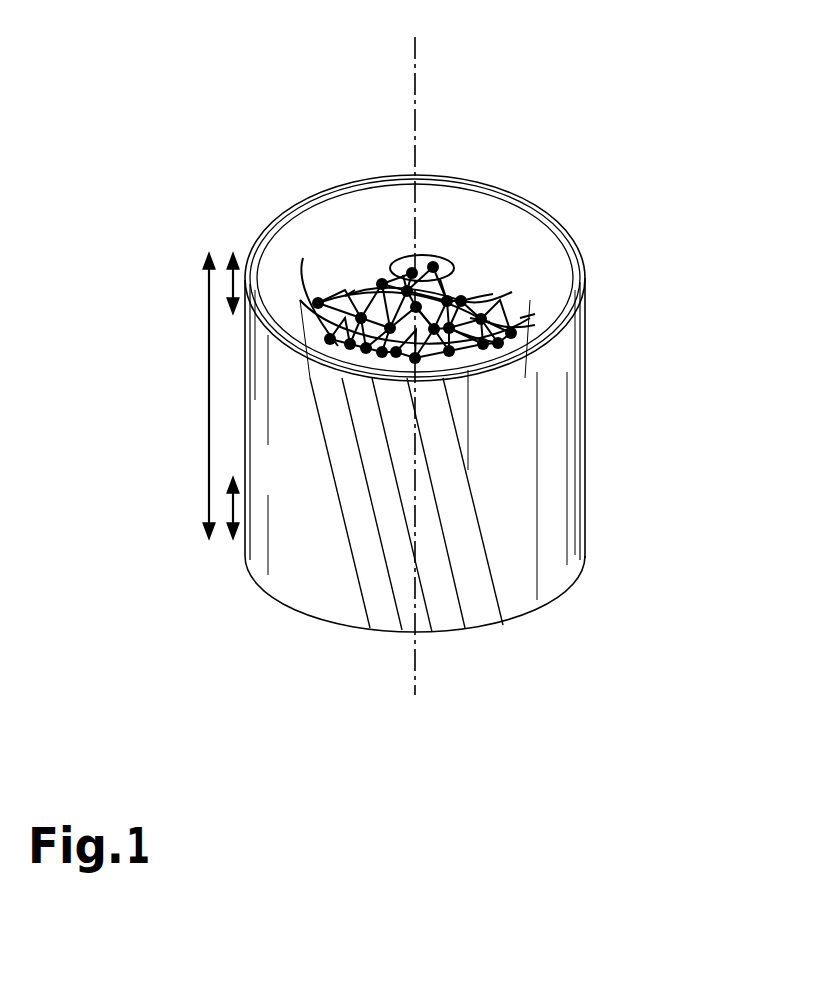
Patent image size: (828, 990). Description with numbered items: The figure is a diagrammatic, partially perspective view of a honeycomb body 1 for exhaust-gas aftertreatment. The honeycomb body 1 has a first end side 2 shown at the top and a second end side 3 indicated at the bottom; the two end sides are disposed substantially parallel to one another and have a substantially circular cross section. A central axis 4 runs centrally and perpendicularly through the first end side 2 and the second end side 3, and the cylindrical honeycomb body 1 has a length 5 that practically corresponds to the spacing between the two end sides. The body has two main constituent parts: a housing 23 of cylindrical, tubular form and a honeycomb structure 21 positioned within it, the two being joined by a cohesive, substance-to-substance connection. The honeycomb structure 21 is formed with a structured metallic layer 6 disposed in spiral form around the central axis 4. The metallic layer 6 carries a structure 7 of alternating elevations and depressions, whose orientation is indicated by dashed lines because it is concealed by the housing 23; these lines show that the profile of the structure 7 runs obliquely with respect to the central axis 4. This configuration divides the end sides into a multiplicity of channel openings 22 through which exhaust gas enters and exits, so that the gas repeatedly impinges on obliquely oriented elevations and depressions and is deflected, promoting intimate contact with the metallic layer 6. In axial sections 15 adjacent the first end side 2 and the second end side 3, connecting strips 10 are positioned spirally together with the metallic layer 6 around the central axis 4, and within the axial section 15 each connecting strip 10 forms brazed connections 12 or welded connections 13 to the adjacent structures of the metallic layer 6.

The honeycomb body 1 is at (592, 196).
The first end side 2 is at (280, 248).
The second end side 3 is at (540, 598).
The central axis 4 is at (413, 60).
The length 5 is at (209, 385).
The structured metallic layer 6 is at (538, 356).
The structure 7 is at (360, 574).
The connecting strip 10 is at (482, 297).
The brazed connection 12 is at (460, 353).
The welded connection 13 is at (460, 353).
The axial section 15 is at (238, 279).
The honeycomb structure 21 is at (438, 212).
The channel openings 22 is at (495, 310).
The housing 23 is at (363, 178).